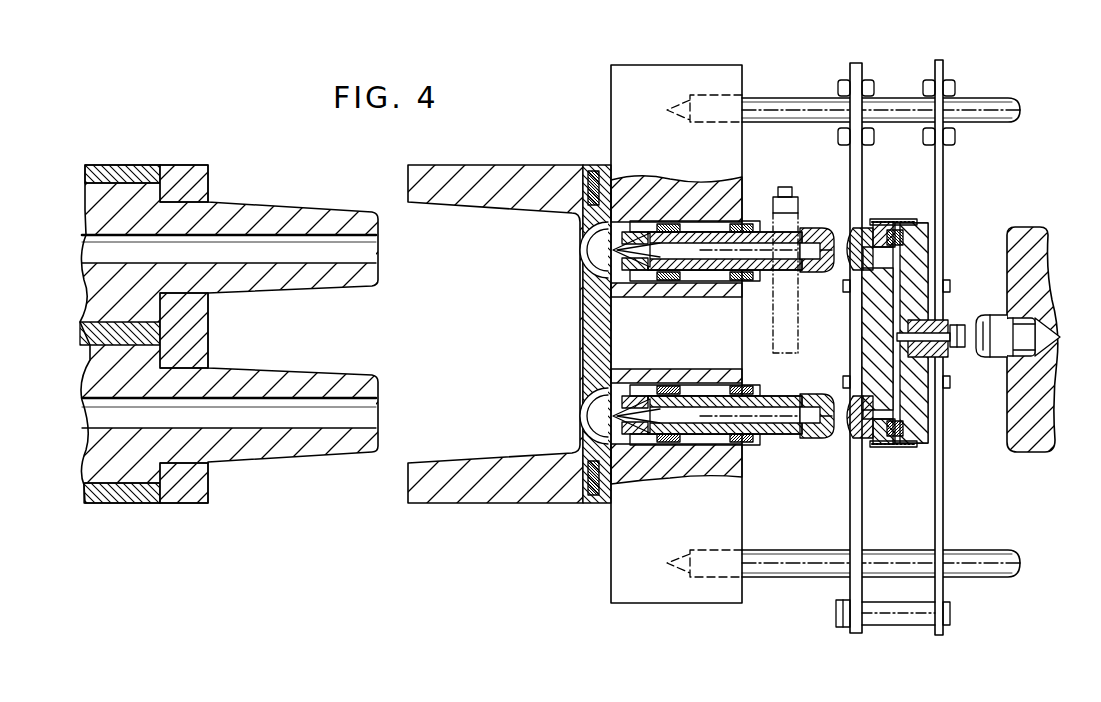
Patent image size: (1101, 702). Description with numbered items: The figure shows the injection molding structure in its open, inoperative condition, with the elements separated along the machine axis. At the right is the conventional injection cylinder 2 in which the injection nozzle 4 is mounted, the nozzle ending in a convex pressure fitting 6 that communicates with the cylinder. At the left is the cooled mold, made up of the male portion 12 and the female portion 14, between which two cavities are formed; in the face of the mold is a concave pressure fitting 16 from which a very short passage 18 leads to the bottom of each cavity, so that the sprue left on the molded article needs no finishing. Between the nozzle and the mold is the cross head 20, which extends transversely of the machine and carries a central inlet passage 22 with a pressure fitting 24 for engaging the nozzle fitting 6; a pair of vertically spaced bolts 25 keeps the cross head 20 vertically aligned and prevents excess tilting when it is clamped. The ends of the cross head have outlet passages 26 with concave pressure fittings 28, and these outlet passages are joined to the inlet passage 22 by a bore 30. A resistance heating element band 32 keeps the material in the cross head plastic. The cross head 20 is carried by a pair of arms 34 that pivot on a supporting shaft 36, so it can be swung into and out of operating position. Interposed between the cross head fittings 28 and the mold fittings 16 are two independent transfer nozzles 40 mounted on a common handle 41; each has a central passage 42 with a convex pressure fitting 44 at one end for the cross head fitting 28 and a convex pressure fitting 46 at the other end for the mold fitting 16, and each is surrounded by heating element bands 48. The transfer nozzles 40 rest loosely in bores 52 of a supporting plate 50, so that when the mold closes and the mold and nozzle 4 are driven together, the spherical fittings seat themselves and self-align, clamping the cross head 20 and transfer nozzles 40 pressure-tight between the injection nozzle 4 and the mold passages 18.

The injection cylinder 2 is at (1015, 230).
The injection nozzle 4 is at (1040, 318).
The convex pressure fitting 6 is at (982, 320).
The male portion 12 is at (117, 165).
The female portion 14 is at (474, 165).
The concave pressure fitting 16 is at (576, 242).
The passage 18 is at (578, 262).
The cross head 20 is at (927, 224).
The central inlet passage 22 is at (927, 310).
The pressure fitting 24 is at (950, 348).
The bolts 25 is at (955, 326).
The outlet passages 26 is at (882, 222).
The concave pressure fittings 28 is at (852, 232).
The bore 30 is at (862, 372).
The resistance heating element band 32 is at (888, 220).
The arms 34 is at (848, 160).
The supporting shaft 36 is at (973, 100).
The transfer nozzles 40 is at (712, 272).
The handle 41 is at (800, 296).
The central passage 42 is at (710, 247).
The convex pressure fitting 44 is at (830, 242).
The convex pressure fitting 46 is at (618, 220).
The heating element bands 48 is at (655, 284).
The supporting plate 50 is at (624, 65).
The bores 52 is at (632, 284).